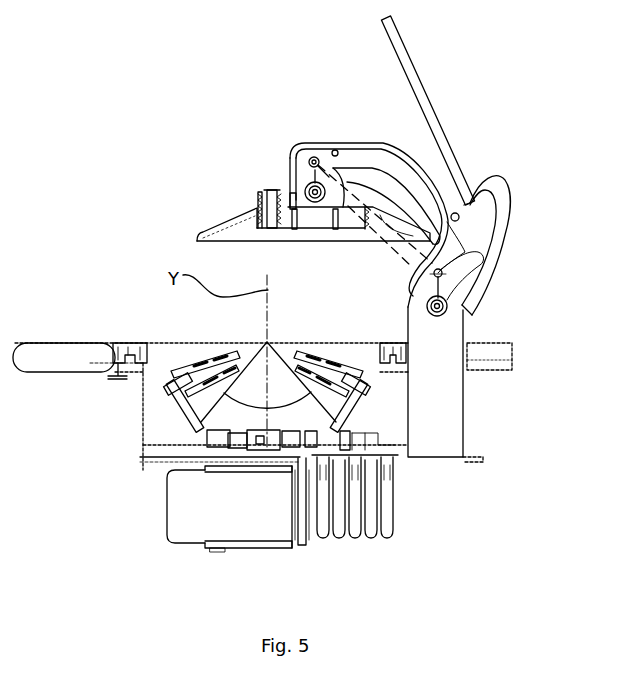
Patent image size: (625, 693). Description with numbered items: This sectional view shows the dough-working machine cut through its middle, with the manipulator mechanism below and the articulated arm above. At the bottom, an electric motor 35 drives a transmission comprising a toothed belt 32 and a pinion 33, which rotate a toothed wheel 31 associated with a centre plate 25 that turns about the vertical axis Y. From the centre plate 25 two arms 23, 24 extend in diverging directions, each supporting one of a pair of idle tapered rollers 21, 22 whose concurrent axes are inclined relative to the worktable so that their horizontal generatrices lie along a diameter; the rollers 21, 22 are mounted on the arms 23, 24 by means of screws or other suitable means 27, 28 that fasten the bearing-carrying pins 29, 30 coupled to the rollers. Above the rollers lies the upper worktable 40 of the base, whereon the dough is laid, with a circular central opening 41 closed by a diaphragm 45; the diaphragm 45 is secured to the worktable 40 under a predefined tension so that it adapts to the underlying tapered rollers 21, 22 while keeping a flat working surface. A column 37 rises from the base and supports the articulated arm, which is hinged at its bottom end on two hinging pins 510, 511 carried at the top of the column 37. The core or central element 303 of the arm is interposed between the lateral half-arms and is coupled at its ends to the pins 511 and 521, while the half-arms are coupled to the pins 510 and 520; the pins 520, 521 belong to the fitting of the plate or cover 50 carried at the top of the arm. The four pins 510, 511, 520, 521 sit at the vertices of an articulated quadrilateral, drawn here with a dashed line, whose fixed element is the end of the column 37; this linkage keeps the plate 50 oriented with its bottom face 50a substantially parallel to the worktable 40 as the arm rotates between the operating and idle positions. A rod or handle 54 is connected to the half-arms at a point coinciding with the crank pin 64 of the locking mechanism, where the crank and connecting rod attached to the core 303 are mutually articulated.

The rod or handle 54 is at (398, 62).
The core or central element 303 is at (365, 165).
The hinging pin 520 is at (293, 177).
The hinging pin 521 is at (312, 157).
The plate or cover 50 is at (250, 222).
The bottom face 50a is at (213, 242).
The crank pin 64 is at (465, 215).
The hinging pin 511 is at (443, 272).
The hinging pin 510 is at (447, 310).
The column 37 is at (452, 417).
The upper worktable 40 is at (500, 360).
The diaphragm 45 is at (330, 343).
The circular central opening 41 is at (151, 352).
The idle tapered roller 21 is at (186, 353).
The bearing-carrying pin 29 is at (206, 368).
The screw or other suitable means 27 is at (166, 391).
The arm 23 is at (206, 437).
The toothed wheel 31 is at (208, 443).
The centre plate or platform 25 is at (254, 428).
The idle tapered roller 22 is at (347, 354).
The bearing-carrying pin 30 is at (317, 370).
The screw or other suitable means 28 is at (356, 388).
The arm 24 is at (338, 410).
The electric motor 35 is at (253, 518).
The toothed belt 32 is at (328, 435).
The pinion 33 is at (353, 440).